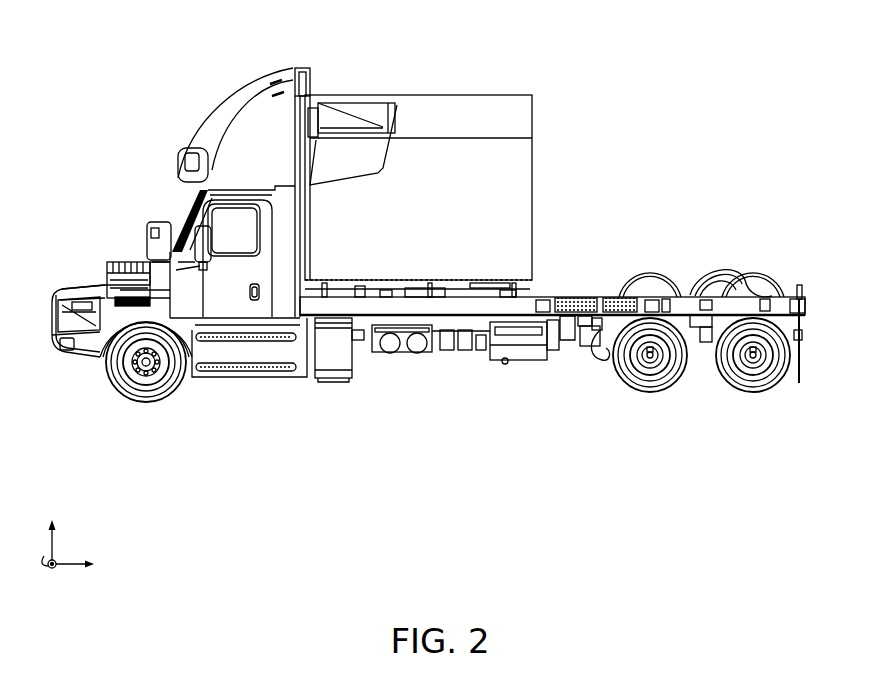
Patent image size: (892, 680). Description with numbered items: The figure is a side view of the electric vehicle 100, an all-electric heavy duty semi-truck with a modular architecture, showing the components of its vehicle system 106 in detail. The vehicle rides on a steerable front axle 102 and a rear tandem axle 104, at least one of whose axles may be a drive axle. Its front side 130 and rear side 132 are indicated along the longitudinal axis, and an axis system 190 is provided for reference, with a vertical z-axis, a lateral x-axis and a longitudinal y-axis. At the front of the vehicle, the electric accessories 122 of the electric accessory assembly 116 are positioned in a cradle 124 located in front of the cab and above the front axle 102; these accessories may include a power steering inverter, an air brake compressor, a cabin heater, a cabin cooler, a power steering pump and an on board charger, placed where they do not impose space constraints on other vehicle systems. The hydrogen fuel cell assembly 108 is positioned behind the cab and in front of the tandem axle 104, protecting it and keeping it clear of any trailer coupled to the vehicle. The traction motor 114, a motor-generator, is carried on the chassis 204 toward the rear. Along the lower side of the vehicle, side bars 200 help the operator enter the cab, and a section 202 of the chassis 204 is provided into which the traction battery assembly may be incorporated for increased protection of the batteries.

The electric vehicle 100 is at (80, 101).
The front axle 102 is at (152, 409).
The rear tandem axle 104 is at (678, 417).
The vehicle system 106 is at (413, 57).
The hydrogen fuel cell assembly 108 is at (417, 206).
The traction motor 114 is at (534, 293).
The electric accessory assembly 116 is at (123, 224).
The electric accessories 122 is at (102, 266).
The cradle 124 is at (74, 250).
The front side 130 is at (58, 286).
The rear side 132 is at (820, 295).
The axis system 190 is at (77, 522).
The side bars 200 is at (249, 393).
The section of the chassis 202 is at (440, 341).
The chassis 204 is at (590, 279).